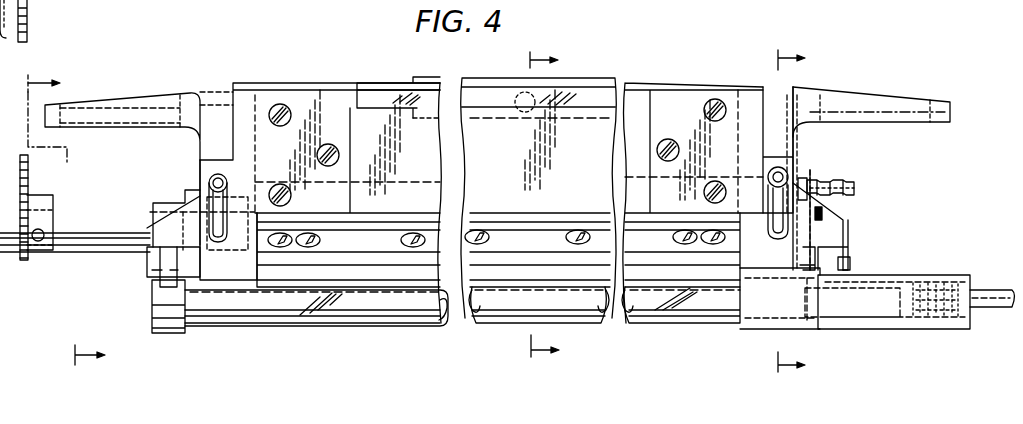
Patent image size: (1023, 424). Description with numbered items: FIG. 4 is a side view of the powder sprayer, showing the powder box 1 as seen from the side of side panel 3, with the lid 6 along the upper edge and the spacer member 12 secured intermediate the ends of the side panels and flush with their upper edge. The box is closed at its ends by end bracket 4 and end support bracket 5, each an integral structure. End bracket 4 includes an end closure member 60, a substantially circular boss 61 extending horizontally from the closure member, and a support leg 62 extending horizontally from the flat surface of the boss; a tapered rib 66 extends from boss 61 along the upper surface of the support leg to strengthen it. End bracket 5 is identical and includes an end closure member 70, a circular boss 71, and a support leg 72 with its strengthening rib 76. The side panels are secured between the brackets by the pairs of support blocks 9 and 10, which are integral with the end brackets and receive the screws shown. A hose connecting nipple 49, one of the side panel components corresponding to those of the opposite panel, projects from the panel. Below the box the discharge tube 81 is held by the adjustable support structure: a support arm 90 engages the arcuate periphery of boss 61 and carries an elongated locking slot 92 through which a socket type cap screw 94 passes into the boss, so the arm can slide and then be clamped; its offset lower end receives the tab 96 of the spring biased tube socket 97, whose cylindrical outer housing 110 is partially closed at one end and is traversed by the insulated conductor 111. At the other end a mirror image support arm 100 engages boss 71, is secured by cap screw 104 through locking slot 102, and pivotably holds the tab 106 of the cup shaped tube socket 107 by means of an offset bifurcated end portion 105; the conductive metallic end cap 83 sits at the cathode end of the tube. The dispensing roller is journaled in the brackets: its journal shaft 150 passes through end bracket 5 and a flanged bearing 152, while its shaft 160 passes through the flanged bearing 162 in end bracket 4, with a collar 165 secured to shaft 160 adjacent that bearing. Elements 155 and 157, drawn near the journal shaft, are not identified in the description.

The powder box 1 is at (605, 80).
The side panel 3 is at (488, 183).
The end bracket 4 is at (794, 88).
The end support bracket 5 is at (231, 66).
The lid 6 is at (380, 62).
The support blocks 9 is at (683, 96).
The support blocks 10 is at (322, 102).
The spacer member 12 is at (804, 213).
The hose connecting nipple 49 is at (838, 180).
The end closure member 60 is at (742, 82).
The circular boss 61 is at (778, 95).
The support leg 62 is at (861, 124).
The tapered rib 66 is at (830, 94).
The end closure member 70 is at (246, 84).
The circular boss 71 is at (208, 102).
The support leg 72 is at (138, 129).
The strengthening rib 76 is at (162, 98).
The discharge tube 81 is at (363, 325).
The conductive metallic end cap 83 is at (842, 332).
The support arm 90 is at (830, 240).
The elongated locking slot 92 is at (768, 172).
The socket type cap screw 94 is at (781, 168).
The tab 96 is at (832, 262).
The spring biased tube socket 97 is at (879, 331).
The support arm 100 is at (176, 203).
The elongated locking slot 102 is at (223, 193).
The cap screw 104 is at (219, 174).
The offset bifurcated end portion 105 is at (147, 259).
The tab 106 is at (160, 285).
The cup shaped tube socket 107 is at (165, 308).
The cylindrical outer housing 110 is at (960, 262).
The insulated conductor 111 is at (982, 317).
The journal shaft 150 is at (78, 212).
The flanged bearing 152 is at (197, 190).
The shoulder 155 is at (163, 202).
The gear 157 is at (32, 180).
The shaft 160 is at (845, 208).
The flanged bearing 162 is at (800, 177).
The collar 165 is at (825, 202).